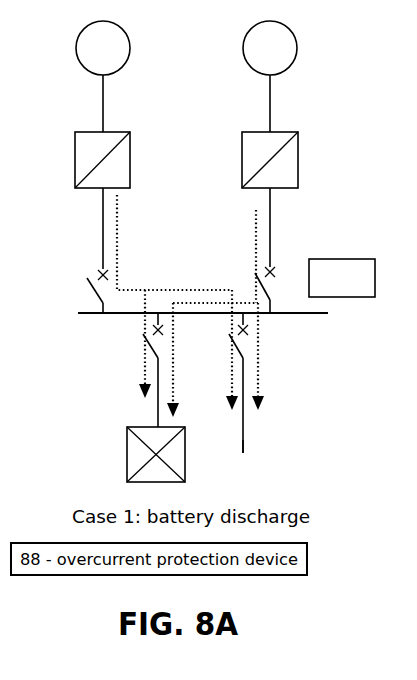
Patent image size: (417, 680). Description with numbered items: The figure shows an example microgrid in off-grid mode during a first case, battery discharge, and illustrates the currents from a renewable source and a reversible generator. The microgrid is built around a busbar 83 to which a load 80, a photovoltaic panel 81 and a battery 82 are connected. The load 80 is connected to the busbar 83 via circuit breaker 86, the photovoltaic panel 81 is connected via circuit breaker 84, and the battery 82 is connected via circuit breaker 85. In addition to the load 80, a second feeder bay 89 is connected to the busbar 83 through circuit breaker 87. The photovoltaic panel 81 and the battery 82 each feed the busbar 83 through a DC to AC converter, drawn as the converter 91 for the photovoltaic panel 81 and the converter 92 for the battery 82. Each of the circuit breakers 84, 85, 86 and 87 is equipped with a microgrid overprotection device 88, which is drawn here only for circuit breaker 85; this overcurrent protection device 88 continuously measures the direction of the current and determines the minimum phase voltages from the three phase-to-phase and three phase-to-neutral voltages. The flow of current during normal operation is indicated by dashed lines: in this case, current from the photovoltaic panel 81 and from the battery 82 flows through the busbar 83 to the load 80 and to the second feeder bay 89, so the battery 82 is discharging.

The load 80 is at (134, 454).
The photovoltaic panel 81 is at (92, 71).
The battery 82 is at (262, 68).
The busbar 83 is at (181, 312).
The circuit breaker 84 is at (84, 250).
The circuit breaker 85 is at (248, 250).
The circuit breaker 86 is at (131, 370).
The circuit breaker 87 is at (265, 383).
The microgrid overprotection device 88 is at (342, 278).
The second feeder bay 89 is at (258, 438).
The DC/AC converter 91 is at (87, 160).
The DC/AC converter 92 is at (251, 160).